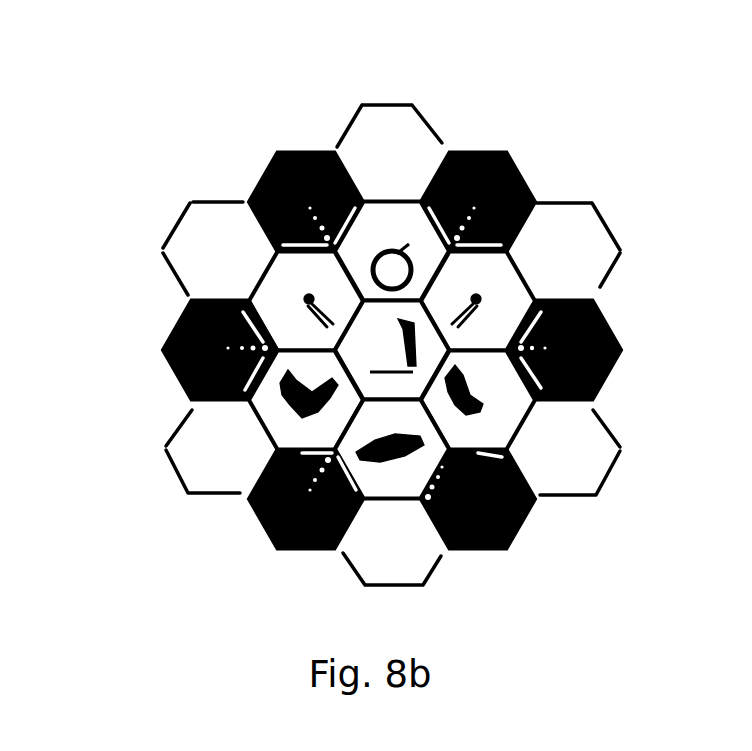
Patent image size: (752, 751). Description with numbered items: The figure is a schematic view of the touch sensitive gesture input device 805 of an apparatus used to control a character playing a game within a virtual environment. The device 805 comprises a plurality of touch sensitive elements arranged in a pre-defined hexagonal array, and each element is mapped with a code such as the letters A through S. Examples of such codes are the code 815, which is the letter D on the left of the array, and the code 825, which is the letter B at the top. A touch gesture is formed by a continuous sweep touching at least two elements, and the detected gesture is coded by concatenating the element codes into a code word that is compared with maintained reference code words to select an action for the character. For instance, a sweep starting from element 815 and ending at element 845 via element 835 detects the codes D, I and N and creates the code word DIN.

The touch sensitive gesture input device 805 is at (405, 77).
The code 815 is at (179, 219).
The code 825 is at (362, 124).
The touch sensitive element 835 is at (177, 323).
The touch sensitive element 845 is at (190, 413).